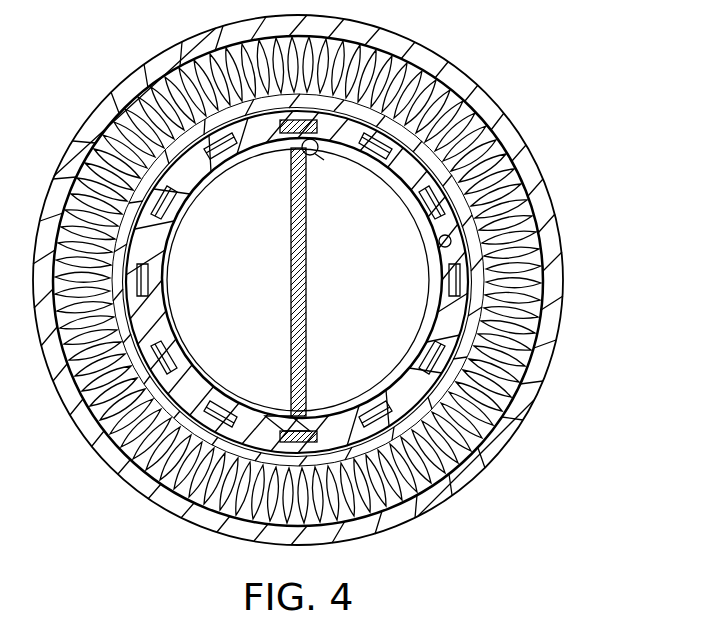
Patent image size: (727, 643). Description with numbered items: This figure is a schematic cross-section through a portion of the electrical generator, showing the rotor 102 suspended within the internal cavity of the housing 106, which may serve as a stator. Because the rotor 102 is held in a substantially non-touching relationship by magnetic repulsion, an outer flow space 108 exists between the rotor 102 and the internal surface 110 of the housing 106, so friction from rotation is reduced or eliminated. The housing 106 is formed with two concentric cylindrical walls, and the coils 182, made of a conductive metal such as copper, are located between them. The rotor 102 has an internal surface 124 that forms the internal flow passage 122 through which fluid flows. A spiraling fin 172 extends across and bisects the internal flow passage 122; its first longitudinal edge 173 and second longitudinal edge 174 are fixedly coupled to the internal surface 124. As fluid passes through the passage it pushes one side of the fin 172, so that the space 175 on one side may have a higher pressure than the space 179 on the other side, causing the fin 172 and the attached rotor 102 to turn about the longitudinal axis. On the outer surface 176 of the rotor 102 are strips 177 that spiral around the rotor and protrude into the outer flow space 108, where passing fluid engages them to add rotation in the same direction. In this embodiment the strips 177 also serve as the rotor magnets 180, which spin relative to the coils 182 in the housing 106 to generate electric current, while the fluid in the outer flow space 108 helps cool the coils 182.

The housing 106 is at (123, 83).
The coils 182 is at (478, 110).
The outer flow space 108 is at (146, 245).
The rotor 102 is at (190, 196).
The internal surface of the housing 110 is at (280, 134).
The first longitudinal edge 173 is at (310, 150).
The internal surface of the rotor 124 is at (418, 223).
The outer surface of the rotor 176 is at (440, 242).
The strips 177 is at (158, 325).
The rotor magnets 180 is at (173, 353).
The second longitudinal edge 174 is at (282, 415).
The fin 172 is at (306, 394).
The space 175 is at (238, 297).
The space 179 is at (355, 297).
The internal flow passage 122 is at (400, 340).